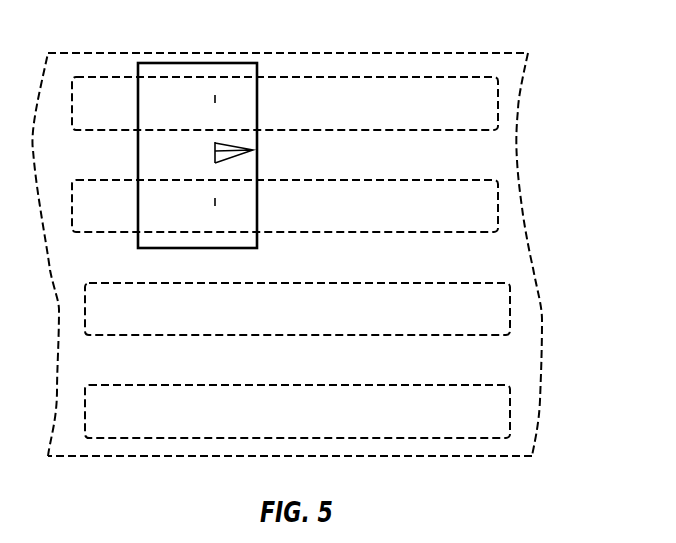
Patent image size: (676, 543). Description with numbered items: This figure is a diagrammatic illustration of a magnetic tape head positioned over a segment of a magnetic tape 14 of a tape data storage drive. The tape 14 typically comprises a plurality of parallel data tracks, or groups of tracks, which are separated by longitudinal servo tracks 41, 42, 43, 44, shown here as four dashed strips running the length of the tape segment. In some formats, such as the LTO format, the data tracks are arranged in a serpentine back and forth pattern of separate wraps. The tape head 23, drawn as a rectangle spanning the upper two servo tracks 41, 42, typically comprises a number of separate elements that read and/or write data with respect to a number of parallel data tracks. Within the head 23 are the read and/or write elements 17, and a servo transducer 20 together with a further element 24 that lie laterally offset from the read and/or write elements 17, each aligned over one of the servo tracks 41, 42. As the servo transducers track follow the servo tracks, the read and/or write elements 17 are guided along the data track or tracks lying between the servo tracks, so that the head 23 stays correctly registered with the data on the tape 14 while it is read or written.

The magnetic tape 14 is at (452, 63).
The read and/or write elements 17 is at (253, 150).
The servo transducer 20 is at (215, 98).
The tape head 23 is at (218, 63).
The second sensor element 24 is at (215, 202).
The servo track 41 is at (485, 101).
The servo track 42 is at (490, 202).
The servo track 43 is at (499, 302).
The servo track 44 is at (499, 403).